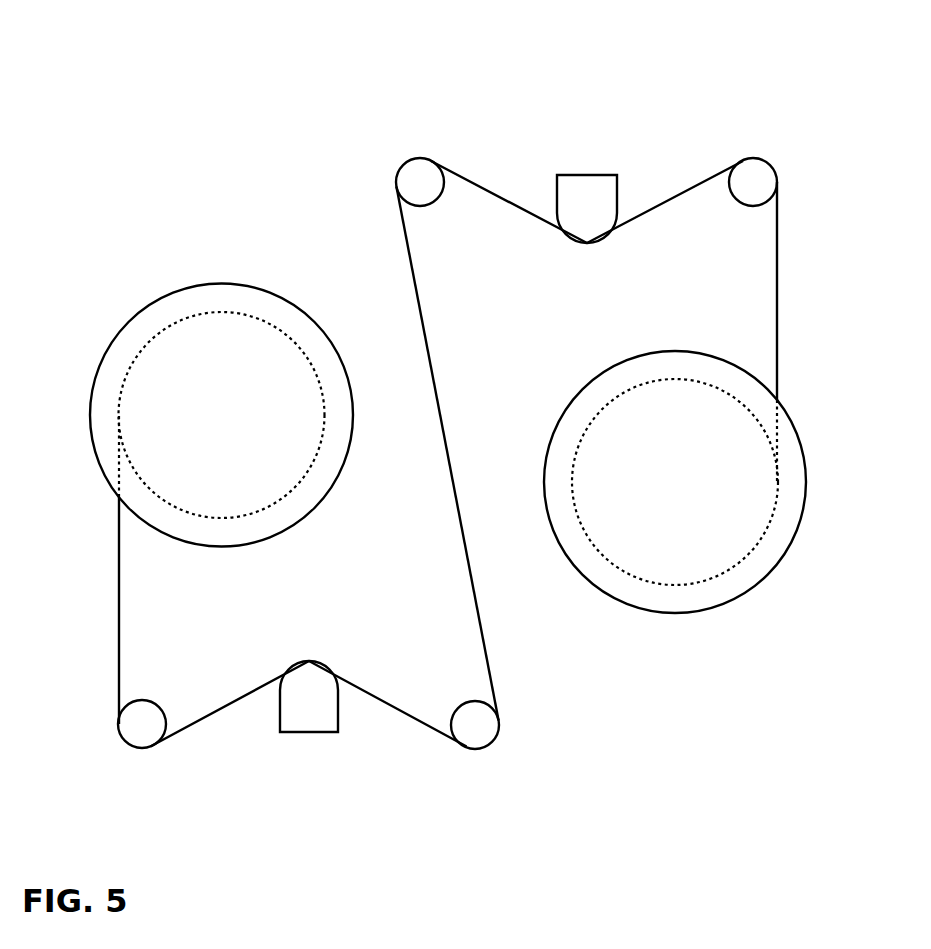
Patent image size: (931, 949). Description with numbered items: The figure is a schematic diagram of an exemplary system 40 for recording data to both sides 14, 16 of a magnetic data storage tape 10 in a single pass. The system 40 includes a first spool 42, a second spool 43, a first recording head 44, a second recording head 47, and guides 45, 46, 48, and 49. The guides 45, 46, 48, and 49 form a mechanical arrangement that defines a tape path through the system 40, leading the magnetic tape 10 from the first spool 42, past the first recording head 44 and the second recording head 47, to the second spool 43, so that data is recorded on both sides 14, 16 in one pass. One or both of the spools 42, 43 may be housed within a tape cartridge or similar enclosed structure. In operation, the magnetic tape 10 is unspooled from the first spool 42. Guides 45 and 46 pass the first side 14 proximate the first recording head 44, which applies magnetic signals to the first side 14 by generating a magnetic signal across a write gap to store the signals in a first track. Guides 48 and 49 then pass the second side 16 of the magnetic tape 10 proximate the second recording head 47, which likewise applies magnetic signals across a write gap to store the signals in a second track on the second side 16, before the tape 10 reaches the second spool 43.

The system 40 is at (170, 75).
The magnetic data storage tape 10 is at (395, 287).
The first side 14 is at (487, 628).
The second side 16 is at (465, 562).
The first spool 42 is at (90, 413).
The second spool 43 is at (807, 480).
The first recording head 44 is at (308, 733).
The guide 45 is at (143, 748).
The guide 46 is at (478, 749).
The second recording head 47 is at (587, 173).
The guide 48 is at (420, 157).
The guide 49 is at (755, 157).